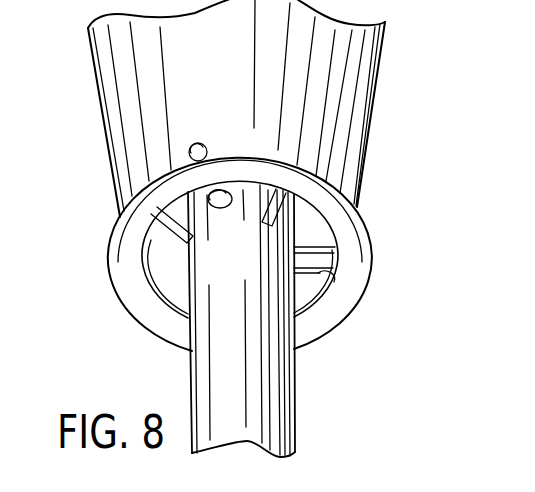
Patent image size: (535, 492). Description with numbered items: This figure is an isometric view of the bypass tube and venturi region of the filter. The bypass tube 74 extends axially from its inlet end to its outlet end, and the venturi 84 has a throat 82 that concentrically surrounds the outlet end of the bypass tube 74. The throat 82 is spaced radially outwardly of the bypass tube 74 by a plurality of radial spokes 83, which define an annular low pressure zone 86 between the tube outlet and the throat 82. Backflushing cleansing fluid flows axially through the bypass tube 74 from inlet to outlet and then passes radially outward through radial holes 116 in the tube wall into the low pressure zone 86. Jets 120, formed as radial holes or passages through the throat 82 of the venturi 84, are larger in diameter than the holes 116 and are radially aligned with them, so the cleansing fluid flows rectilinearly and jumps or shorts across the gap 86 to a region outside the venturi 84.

The bypass tube 74 is at (188, 388).
The throat 82 is at (107, 263).
The radial spokes 83 is at (323, 278).
The venturi 84 is at (365, 57).
The low pressure zone 86 is at (157, 278).
The radial holes 116 is at (228, 207).
The jets 120 is at (205, 143).